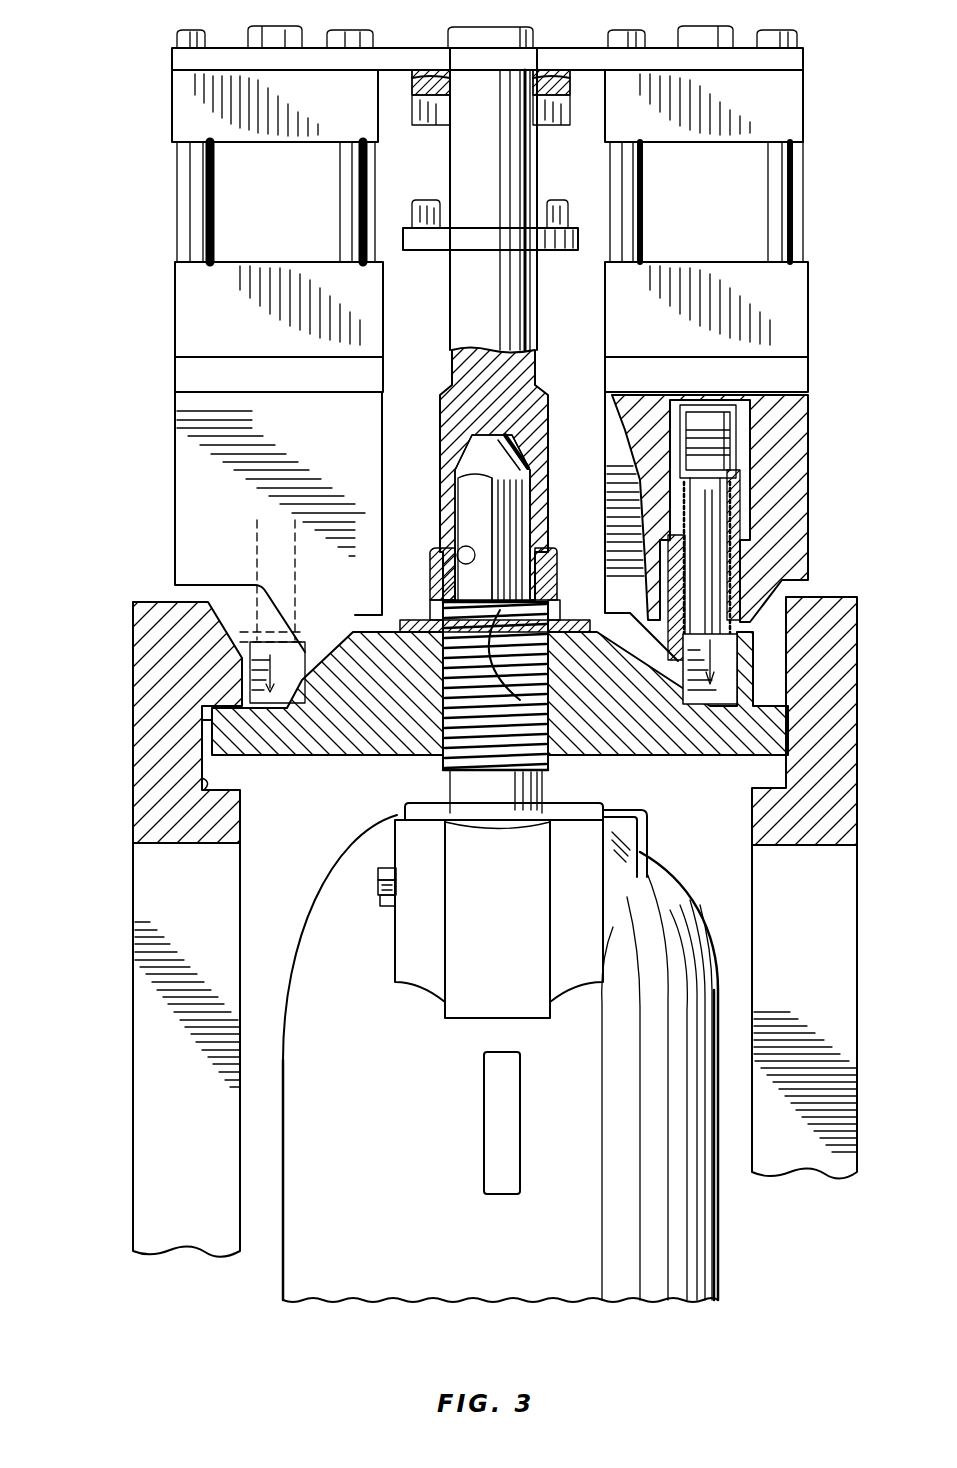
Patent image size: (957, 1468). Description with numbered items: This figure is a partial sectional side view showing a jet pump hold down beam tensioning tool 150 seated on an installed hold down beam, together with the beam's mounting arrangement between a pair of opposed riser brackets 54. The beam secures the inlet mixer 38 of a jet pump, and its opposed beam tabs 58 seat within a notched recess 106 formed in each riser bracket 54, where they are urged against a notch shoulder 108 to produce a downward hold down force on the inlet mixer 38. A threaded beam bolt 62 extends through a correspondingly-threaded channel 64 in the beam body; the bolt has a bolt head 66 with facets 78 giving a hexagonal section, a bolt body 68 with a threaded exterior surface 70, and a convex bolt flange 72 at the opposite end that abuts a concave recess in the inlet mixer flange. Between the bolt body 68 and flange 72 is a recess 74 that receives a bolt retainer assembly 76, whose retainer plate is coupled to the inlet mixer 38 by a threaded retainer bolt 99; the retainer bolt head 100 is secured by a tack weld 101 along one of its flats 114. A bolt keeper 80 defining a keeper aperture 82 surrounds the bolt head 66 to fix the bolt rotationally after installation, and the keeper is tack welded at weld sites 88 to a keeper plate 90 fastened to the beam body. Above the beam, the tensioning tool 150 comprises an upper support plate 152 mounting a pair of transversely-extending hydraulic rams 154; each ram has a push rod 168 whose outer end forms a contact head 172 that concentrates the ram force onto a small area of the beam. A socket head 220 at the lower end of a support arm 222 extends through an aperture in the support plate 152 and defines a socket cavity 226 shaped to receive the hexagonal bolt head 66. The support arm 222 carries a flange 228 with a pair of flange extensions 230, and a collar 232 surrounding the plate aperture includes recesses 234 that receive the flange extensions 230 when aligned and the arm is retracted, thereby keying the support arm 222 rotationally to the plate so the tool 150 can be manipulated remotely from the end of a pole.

The inlet mixer 38 is at (690, 1025).
The riser brackets 54 is at (134, 616).
The beam tabs 58 is at (248, 755).
The beam bolt 62 is at (455, 480).
The threaded channel 64 is at (550, 706).
The bolt head 66 is at (470, 452).
The bolt body 68 is at (445, 694).
The threaded exterior surface 70 is at (560, 621).
The bolt flange 72 is at (485, 826).
The recess 74 is at (545, 792).
The bolt retainer assembly 76 is at (358, 860).
The facets 78 is at (515, 512).
The bolt keeper 80 is at (432, 574).
The keeper aperture 82 is at (457, 552).
The weld sites 88 is at (430, 612).
The keeper plate 90 is at (410, 630).
The retainer bolt 99 is at (380, 895).
The retainer bolt head 100 is at (385, 870).
The tack weld 101 is at (378, 880).
The notched recess 106 is at (204, 794).
The notch shoulder 108 is at (206, 724).
The flats 114 is at (386, 908).
The beam tensioning tool 150 is at (108, 262).
The upper support plate 152 is at (800, 57).
The rams 154 is at (170, 380).
The push rod 168 is at (720, 565).
The contact head 172 is at (742, 675).
The socket head 220 is at (448, 505).
The support arm 222 is at (455, 296).
The socket cavity 226 is at (535, 460).
The flange 228 is at (556, 252).
The flange extensions 230 is at (558, 206).
The collar 232 is at (565, 88).
The recesses 234 is at (420, 106).